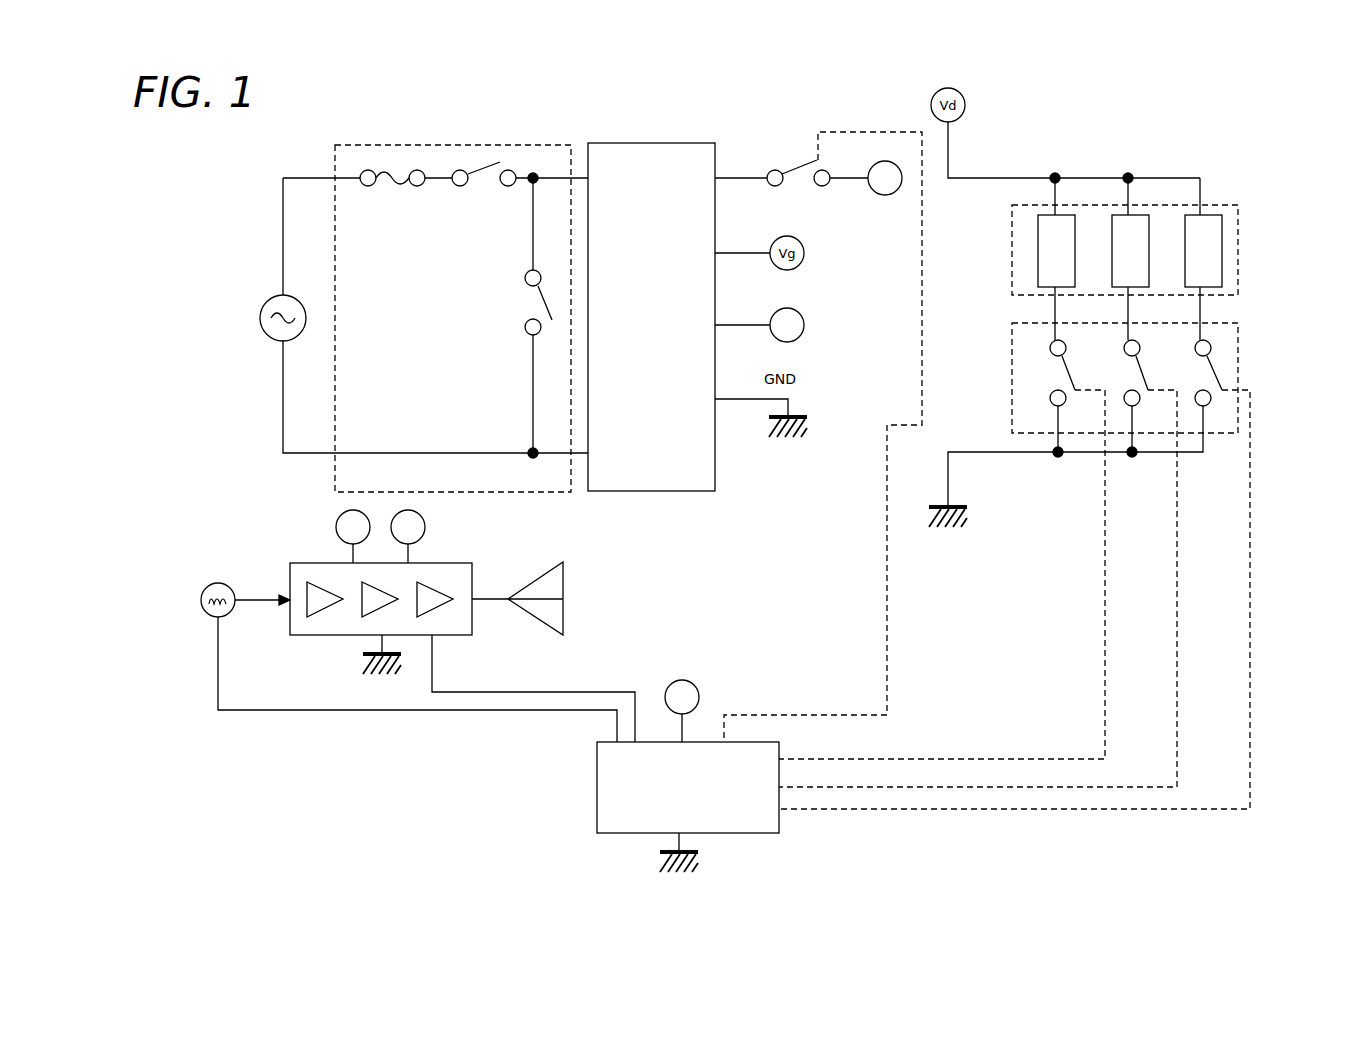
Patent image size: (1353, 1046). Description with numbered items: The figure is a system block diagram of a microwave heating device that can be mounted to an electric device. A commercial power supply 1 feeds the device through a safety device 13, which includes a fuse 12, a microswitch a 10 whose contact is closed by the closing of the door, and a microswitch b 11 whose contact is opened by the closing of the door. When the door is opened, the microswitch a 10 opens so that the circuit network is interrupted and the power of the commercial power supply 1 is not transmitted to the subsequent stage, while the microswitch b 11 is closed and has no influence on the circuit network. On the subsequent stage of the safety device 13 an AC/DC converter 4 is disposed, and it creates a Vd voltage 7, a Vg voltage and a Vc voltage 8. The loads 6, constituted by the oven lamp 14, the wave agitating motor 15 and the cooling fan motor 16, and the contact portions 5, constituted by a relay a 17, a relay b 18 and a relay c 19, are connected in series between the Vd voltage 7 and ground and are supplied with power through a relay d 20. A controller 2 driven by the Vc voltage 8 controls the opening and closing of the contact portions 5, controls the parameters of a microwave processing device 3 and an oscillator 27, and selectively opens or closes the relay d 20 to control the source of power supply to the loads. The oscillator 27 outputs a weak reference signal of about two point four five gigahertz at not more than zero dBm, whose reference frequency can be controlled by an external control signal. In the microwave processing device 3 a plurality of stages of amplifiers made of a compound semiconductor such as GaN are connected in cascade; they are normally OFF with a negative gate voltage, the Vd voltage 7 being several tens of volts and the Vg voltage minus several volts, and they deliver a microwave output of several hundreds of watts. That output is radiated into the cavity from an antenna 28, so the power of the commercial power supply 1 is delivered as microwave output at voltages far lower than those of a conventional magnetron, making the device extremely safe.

The commercial power supply 1 is at (261, 308).
The controller 2 is at (779, 823).
The microwave processing device 3 is at (320, 563).
The AC/DC converter 4 is at (648, 138).
The contact portions 5 is at (1162, 366).
The loads 6 is at (1162, 205).
The Vd voltage 7 is at (876, 196).
The Vc voltage 8 is at (805, 337).
The microswitch a 10 is at (471, 284).
The microswitch b 11 is at (525, 297).
The fuse 12 is at (405, 165).
The safety device 13 is at (537, 492).
The oven lamp 14 is at (1083, 233).
The wave agitating motor 15 is at (1147, 230).
The cooling fan motor 16 is at (1222, 233).
The relay a 17 is at (1067, 342).
The relay b 18 is at (1140, 342).
The relay c 19 is at (1213, 342).
The relay d 20 is at (810, 166).
The oscillator 27 is at (237, 583).
The antenna 28 is at (567, 598).